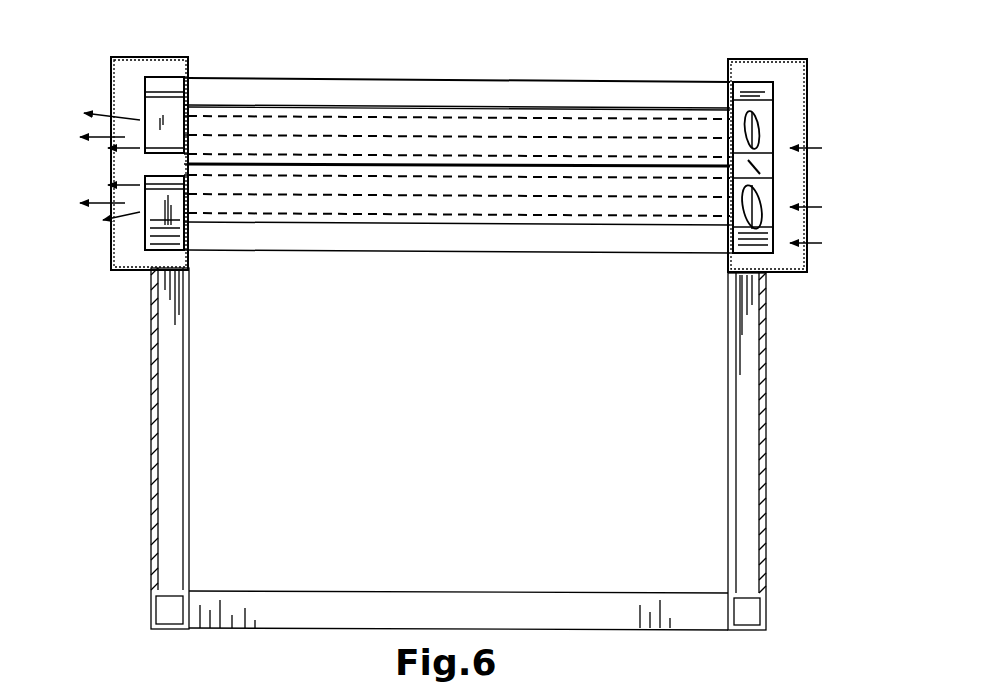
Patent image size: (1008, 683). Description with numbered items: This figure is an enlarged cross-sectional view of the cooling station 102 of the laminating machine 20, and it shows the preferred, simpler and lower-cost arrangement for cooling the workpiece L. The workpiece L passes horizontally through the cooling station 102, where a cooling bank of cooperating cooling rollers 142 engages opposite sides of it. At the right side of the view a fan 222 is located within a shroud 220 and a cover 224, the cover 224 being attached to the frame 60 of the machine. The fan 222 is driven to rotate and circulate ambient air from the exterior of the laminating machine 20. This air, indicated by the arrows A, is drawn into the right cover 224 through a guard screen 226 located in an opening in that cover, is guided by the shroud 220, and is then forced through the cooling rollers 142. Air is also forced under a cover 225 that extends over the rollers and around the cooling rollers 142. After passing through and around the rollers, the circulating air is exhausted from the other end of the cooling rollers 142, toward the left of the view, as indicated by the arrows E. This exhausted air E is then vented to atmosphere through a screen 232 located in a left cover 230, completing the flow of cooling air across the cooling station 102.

The laminating machine 20 is at (548, 57).
The frame 60 is at (766, 466).
The cooling station 102 is at (251, 94).
The cooling rollers 142 is at (292, 107).
The shroud 220 is at (745, 240).
The fan 222 is at (755, 130).
The cover 224 is at (786, 98).
The cover 225 is at (423, 80).
The guard screen 226 is at (808, 222).
The left cover 230 is at (178, 57).
The screen 232 is at (112, 95).
The arrows indicating exhausted air E is at (126, 220).
The workpiece L is at (249, 167).
The arrows indicating intake air A is at (810, 247).